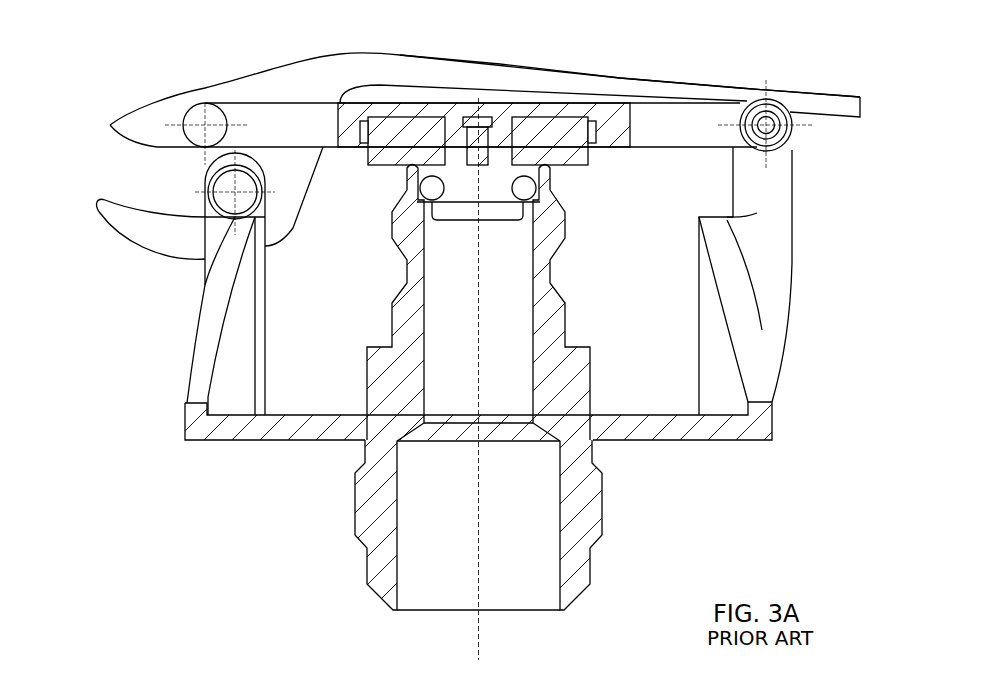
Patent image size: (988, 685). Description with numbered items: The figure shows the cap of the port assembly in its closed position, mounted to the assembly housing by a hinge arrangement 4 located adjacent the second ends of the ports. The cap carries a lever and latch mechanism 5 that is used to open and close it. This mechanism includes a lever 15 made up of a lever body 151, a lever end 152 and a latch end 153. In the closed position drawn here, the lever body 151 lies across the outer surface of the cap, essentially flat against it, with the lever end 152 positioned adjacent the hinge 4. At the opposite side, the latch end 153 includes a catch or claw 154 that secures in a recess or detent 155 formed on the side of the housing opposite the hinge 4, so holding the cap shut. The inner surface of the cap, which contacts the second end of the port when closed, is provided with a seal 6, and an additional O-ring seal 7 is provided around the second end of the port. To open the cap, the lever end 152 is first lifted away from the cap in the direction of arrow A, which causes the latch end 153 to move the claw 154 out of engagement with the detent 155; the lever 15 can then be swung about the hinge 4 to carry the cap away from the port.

The lever and latch mechanism 5 is at (342, 55).
The lever body 151 is at (445, 78).
The lever 15 is at (688, 80).
The lever end 152 is at (853, 110).
The hinge arrangement 4 is at (794, 140).
The seal 6 is at (597, 130).
The O-ring seal 7 is at (416, 192).
The latch end 153 is at (123, 127).
The claw 154 is at (157, 240).
The detent 155 is at (278, 225).
The arrow A is at (593, 50).